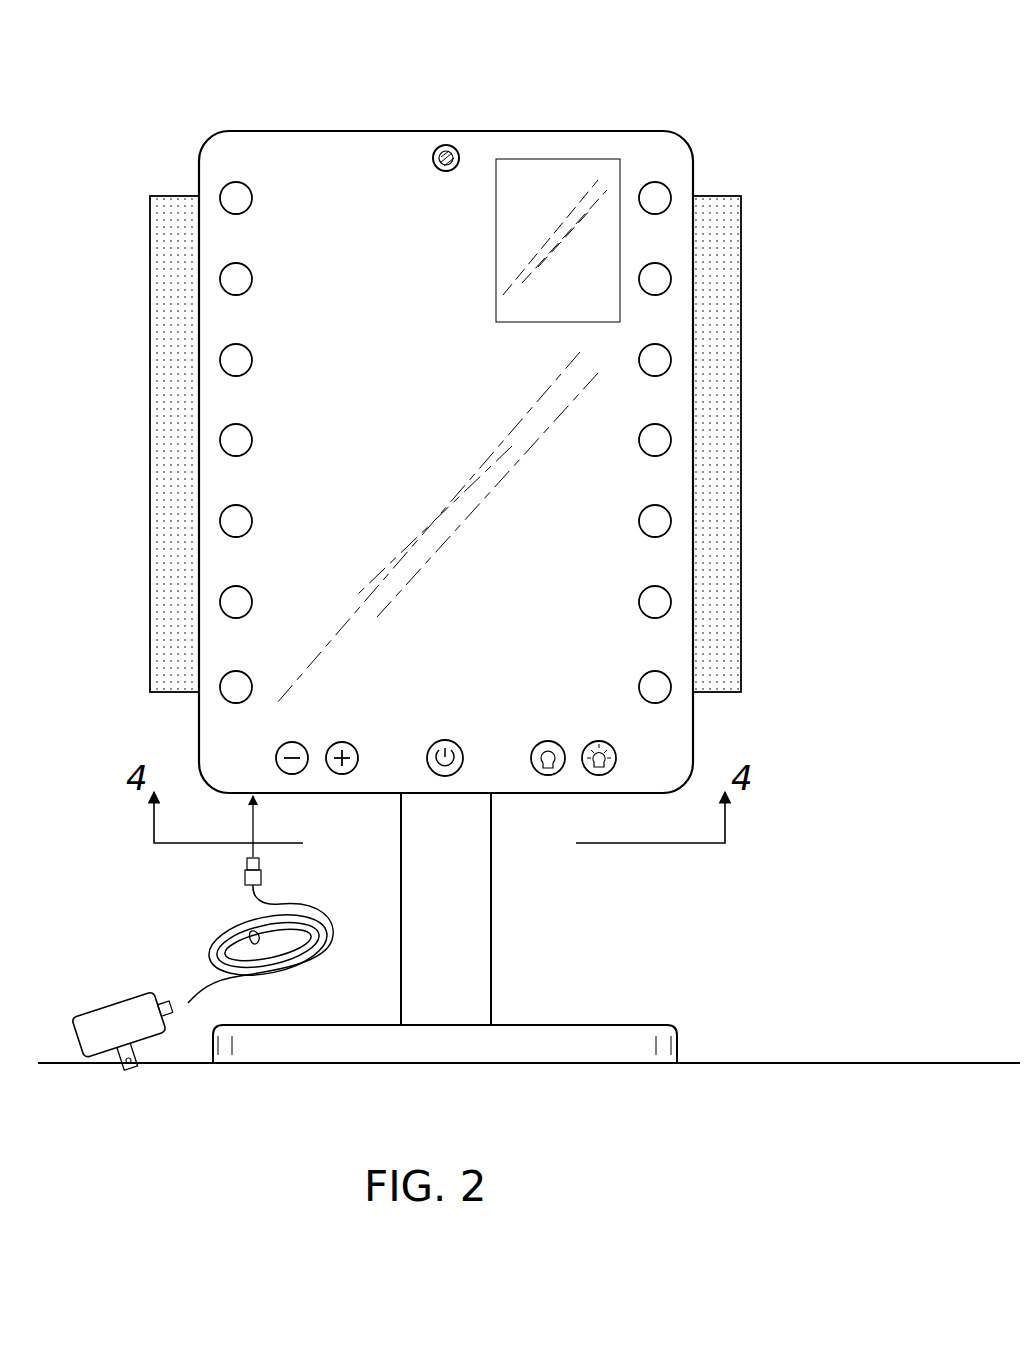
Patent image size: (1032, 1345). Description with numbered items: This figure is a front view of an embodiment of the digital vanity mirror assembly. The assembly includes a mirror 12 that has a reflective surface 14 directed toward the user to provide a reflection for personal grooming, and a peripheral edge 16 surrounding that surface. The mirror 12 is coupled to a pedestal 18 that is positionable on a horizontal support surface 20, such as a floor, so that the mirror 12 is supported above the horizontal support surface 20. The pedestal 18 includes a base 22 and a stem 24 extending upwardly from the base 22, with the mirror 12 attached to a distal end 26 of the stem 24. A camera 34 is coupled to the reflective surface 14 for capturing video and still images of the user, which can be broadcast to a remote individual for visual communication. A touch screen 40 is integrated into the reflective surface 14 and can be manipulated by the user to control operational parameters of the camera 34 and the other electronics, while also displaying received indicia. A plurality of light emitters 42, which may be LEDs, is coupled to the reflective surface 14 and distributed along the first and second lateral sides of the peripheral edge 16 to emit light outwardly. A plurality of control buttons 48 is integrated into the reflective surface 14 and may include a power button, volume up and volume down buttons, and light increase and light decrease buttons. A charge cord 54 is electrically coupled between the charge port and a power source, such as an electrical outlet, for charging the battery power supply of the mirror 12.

The mirror 12 is at (207, 137).
The reflective surface 14 is at (313, 175).
The peripheral edge 16 is at (198, 293).
The pedestal 18 is at (485, 928).
The horizontal support surface 20 is at (838, 1062).
The base 22 is at (677, 1032).
The stem 24 is at (492, 932).
The distal end 26 is at (417, 790).
The camera 34 is at (447, 145).
The touch screen 40 is at (605, 159).
The light emitters 42 is at (220, 360).
The control buttons 48 is at (440, 742).
The charge cord 54 is at (195, 940).